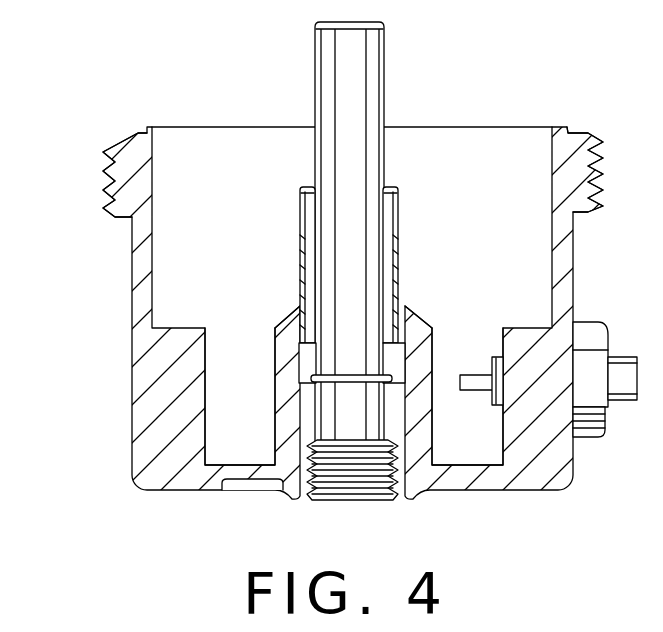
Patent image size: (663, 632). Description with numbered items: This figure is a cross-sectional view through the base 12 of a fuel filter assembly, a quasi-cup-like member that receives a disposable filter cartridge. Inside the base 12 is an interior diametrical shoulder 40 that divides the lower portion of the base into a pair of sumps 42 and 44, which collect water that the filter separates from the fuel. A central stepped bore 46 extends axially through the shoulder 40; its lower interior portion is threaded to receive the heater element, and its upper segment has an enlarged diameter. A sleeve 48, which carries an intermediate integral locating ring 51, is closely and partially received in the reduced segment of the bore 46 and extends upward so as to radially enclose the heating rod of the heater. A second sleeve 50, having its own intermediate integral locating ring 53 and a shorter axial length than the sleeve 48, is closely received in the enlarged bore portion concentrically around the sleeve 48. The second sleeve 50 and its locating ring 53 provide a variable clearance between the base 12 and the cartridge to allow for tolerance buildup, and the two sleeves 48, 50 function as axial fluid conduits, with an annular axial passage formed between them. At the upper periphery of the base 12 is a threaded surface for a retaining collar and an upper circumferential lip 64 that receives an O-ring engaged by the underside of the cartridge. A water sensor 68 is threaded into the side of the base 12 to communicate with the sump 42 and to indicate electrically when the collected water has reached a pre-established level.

The base 12 is at (147, 393).
The interior diametrical shoulder 40 is at (285, 315).
The sump 42 is at (232, 447).
The sump 44 is at (578, 469).
The central stepped bore 46 is at (405, 316).
The sleeve 48 is at (315, 72).
The second sleeve 50 is at (398, 214).
The locating ring 51 is at (302, 361).
The locating ring 53 is at (400, 300).
The upper circumferential lip 64 is at (147, 128).
The water sensor 68 is at (472, 391).